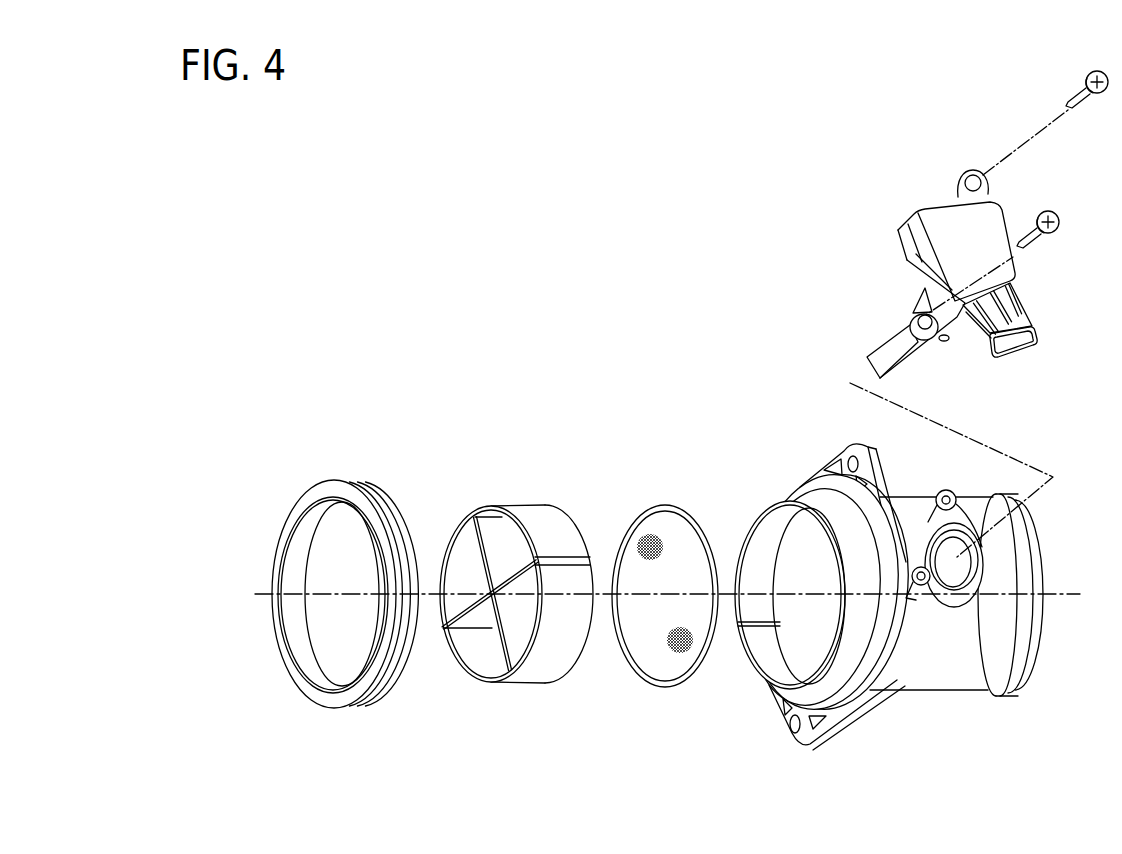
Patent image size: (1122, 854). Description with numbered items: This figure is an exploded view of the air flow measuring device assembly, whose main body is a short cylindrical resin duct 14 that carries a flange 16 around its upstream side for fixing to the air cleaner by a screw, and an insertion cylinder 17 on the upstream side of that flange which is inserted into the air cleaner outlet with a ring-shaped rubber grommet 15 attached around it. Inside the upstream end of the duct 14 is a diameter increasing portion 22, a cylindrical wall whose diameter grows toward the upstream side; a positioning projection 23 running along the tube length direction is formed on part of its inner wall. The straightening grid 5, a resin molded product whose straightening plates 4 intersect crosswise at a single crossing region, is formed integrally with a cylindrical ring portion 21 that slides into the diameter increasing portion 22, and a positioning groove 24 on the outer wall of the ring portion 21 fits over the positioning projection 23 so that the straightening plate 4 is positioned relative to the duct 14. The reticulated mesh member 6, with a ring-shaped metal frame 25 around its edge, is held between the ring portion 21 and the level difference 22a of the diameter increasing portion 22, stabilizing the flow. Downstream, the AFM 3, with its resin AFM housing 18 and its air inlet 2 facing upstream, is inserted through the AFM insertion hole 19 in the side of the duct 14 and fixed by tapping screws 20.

The air inlet 2 is at (892, 356).
The AFM 3 is at (946, 333).
The straightening plate 4 is at (508, 572).
The straightening grid 5 is at (509, 579).
The mesh member 6 is at (665, 594).
The duct 14 is at (906, 673).
The grommet 15 is at (355, 497).
The flange 16 is at (877, 487).
The insertion cylinder 17 is at (835, 516).
The AFM housing 18 is at (917, 357).
The AFM insertion hole 19 is at (978, 562).
The tapping screw 20 is at (1094, 96).
The ring portion 21 is at (537, 513).
The diameter increasing portion 22 is at (778, 582).
The level difference 22a is at (787, 538).
The positioning projection 23 is at (760, 628).
The positioning groove 24 is at (573, 559).
The frame 25 is at (674, 683).